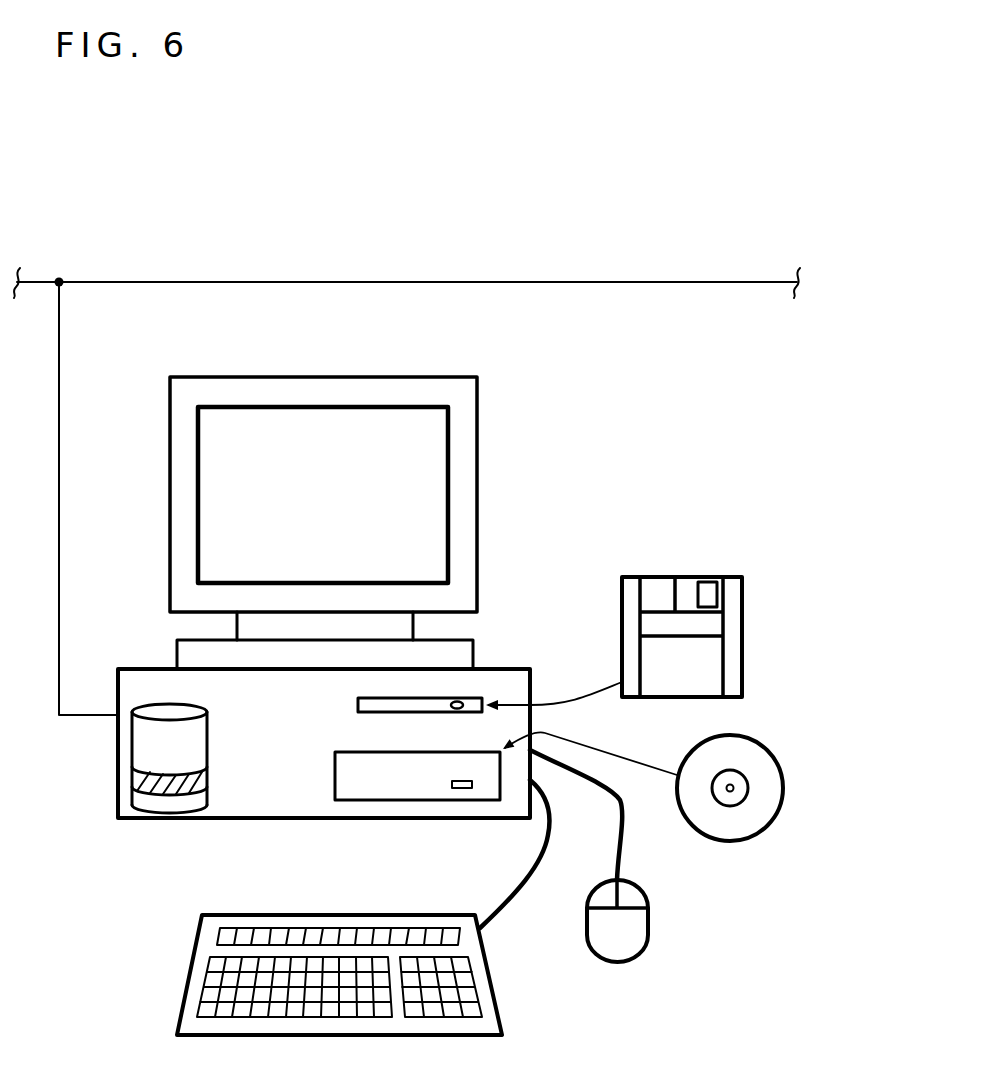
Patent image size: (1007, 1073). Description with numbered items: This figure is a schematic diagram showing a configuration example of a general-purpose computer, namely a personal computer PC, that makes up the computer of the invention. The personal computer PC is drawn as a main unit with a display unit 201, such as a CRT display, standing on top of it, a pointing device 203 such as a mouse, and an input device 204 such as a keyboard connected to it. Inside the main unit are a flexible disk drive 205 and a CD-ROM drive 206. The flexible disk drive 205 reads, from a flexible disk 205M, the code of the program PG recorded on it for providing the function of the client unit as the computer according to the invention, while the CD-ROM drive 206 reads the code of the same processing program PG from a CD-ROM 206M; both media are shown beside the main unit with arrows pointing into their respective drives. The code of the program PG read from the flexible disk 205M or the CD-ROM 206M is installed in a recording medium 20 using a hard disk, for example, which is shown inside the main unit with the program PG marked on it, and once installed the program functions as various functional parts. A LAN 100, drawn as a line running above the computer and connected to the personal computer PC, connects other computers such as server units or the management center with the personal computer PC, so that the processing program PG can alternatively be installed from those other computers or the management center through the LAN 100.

The LAN 100 is at (633, 282).
The display unit 201 is at (434, 377).
The personal computer PC is at (504, 650).
The recording medium 20 is at (167, 807).
The program PG is at (133, 773).
The flexible disk drive 205 is at (357, 704).
The CD-ROM drive 206 is at (335, 773).
The flexible disk 205M is at (727, 577).
The CD-ROM 206M is at (752, 842).
The pointing device 203 is at (637, 953).
The input device 204 is at (190, 976).